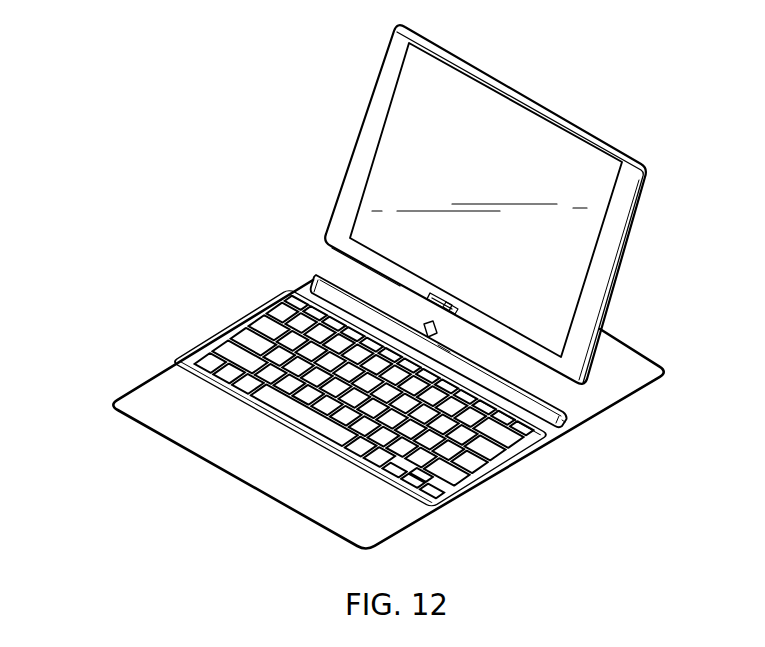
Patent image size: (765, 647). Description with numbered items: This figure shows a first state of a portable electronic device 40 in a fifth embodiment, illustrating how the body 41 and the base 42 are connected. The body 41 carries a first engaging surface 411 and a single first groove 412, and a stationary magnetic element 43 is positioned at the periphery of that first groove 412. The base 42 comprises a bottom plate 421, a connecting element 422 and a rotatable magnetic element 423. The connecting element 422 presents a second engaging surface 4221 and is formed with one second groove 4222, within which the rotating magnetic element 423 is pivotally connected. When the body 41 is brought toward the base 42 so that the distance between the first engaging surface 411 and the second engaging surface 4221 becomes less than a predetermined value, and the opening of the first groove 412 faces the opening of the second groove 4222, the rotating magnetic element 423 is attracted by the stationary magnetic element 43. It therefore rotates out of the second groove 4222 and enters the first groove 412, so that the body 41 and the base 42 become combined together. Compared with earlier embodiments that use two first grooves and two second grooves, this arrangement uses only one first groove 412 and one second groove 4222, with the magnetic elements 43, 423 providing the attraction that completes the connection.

The portable electronic device 40 is at (112, 105).
The body 41 is at (395, 50).
The first engaging surface 411 is at (321, 264).
The first groove 412 is at (459, 307).
The base 42 is at (110, 398).
The bottom plate 421 is at (170, 372).
The connecting element 422 is at (566, 430).
The second engaging surface 4221 is at (570, 403).
The second groove 4222 is at (445, 344).
The rotatable magnetic element 423 is at (427, 325).
The stationary magnetic element 43 is at (447, 298).